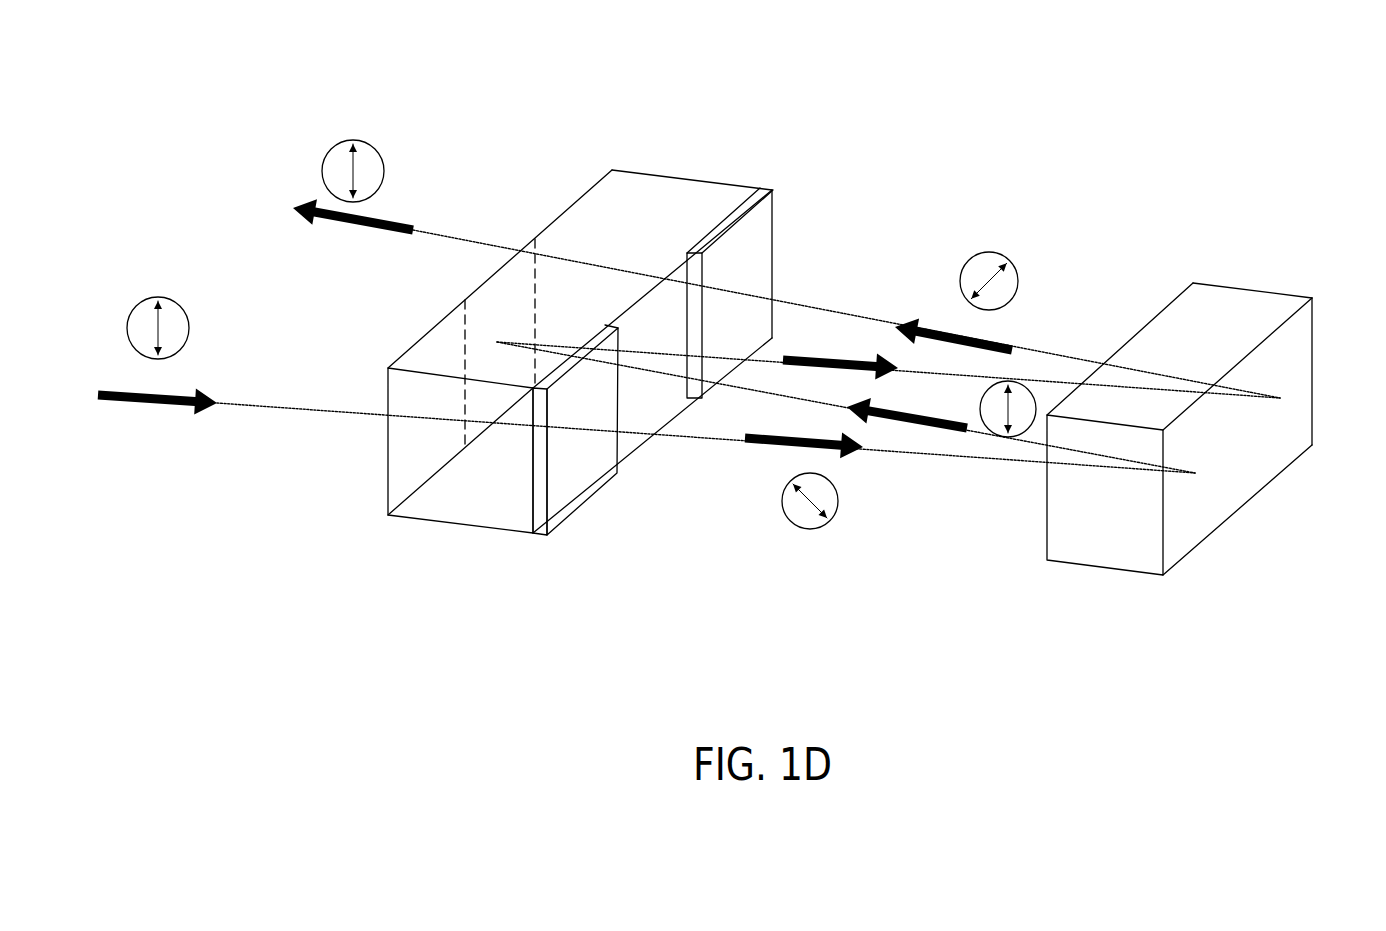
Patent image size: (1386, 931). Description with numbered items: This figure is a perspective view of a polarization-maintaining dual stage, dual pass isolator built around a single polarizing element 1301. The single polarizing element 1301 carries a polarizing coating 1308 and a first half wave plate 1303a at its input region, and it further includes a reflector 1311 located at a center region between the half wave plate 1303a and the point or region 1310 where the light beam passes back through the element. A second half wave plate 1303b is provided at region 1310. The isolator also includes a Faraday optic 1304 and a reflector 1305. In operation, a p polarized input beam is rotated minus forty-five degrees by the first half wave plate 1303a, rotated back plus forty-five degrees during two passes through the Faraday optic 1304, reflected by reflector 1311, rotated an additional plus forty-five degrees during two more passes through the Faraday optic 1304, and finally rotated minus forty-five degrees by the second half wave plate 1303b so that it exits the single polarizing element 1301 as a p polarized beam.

The single polarizing element 1301 is at (742, 160).
The half wave plate 1303a is at (598, 470).
The second half wave plate 1303b is at (750, 242).
The Faraday optic 1304 is at (1238, 270).
The reflector 1305 is at (1260, 463).
The polarizing coating 1308 is at (447, 462).
The region 1310 is at (743, 283).
The reflector 1311 is at (490, 327).